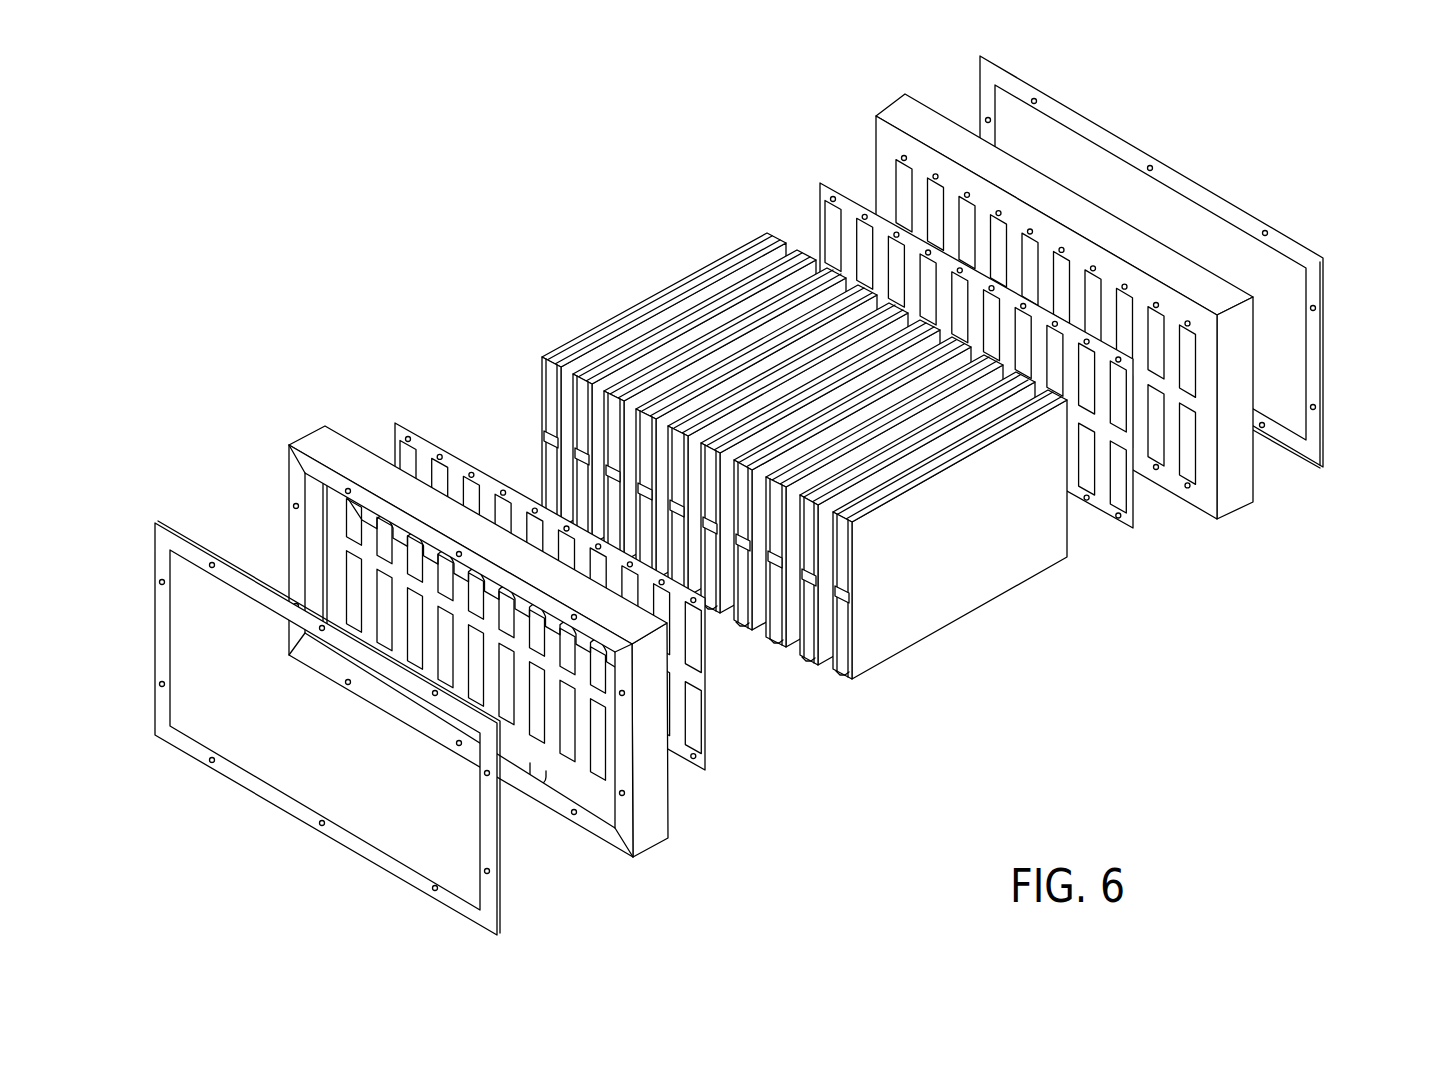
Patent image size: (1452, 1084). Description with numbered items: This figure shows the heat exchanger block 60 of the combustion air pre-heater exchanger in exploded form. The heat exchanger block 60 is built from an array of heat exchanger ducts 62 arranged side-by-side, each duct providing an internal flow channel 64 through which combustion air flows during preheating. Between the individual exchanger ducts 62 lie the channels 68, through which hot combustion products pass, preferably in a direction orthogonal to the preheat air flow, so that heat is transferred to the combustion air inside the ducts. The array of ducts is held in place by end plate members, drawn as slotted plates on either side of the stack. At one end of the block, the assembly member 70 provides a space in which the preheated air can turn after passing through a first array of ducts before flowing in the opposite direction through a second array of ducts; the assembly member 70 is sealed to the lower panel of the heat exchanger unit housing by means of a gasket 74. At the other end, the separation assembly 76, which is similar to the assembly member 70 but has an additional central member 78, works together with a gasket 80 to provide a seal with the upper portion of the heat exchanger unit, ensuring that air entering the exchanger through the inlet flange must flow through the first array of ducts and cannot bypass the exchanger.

The heat exchanger block 60 is at (680, 178).
The heat exchanger duct 62 is at (973, 582).
The internal flow channel 64 is at (842, 650).
The channel 68 is at (572, 363).
The assembly member 70 is at (1235, 499).
The gasket 74 is at (1310, 452).
The separation assembly 76 is at (503, 674).
The central member 78 is at (459, 660).
The gasket 80 is at (499, 904).